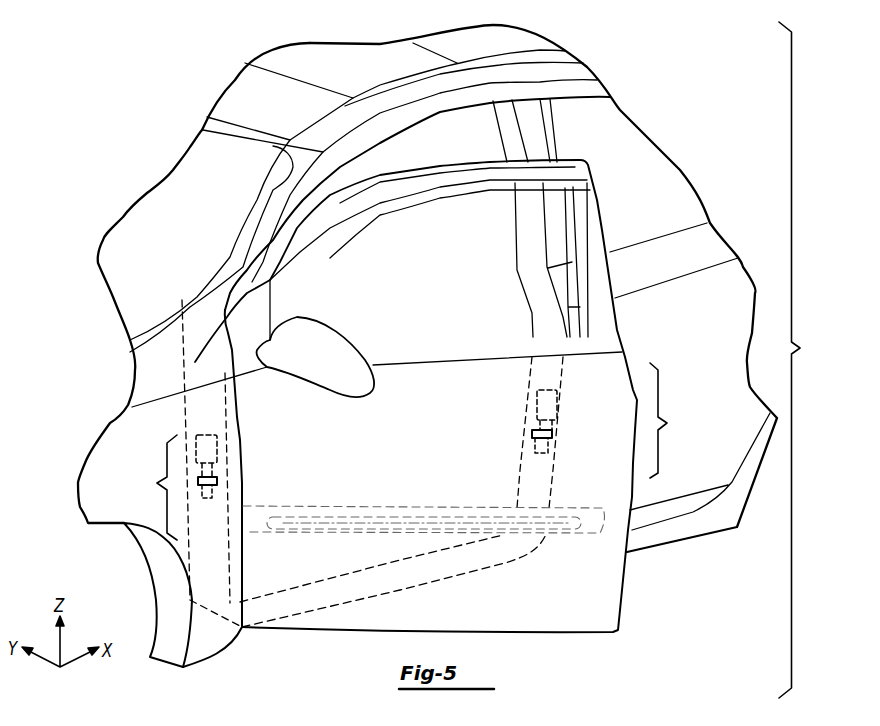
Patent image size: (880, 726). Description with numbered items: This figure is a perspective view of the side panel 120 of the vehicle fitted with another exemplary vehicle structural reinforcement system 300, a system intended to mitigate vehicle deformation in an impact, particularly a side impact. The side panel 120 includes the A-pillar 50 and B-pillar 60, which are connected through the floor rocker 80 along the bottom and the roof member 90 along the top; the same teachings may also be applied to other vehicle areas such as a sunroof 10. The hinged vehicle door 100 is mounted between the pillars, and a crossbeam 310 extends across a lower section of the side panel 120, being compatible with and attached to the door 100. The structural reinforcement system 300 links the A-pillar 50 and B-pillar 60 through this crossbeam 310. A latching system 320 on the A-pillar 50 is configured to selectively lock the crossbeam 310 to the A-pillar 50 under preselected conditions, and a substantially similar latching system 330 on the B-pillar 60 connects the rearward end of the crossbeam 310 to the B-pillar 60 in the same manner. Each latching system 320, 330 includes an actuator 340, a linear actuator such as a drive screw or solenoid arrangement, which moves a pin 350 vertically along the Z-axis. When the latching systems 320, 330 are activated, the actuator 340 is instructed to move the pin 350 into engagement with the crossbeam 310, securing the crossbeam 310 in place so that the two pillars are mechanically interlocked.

The sunroof 10 is at (300, 81).
The A-pillar 50 is at (268, 230).
The B-pillar 60 is at (512, 133).
The floor rocker 80 is at (318, 608).
The roof member 90 is at (503, 86).
The vehicle door 100 is at (426, 448).
The side panel 120 is at (594, 65).
The vehicle structural reinforcement system 300 is at (805, 360).
The crossbeam 310 is at (333, 507).
The latching system 320 is at (149, 487).
The latching system 330 is at (675, 420).
The actuator 340 is at (217, 448).
The pin 350 is at (217, 488).